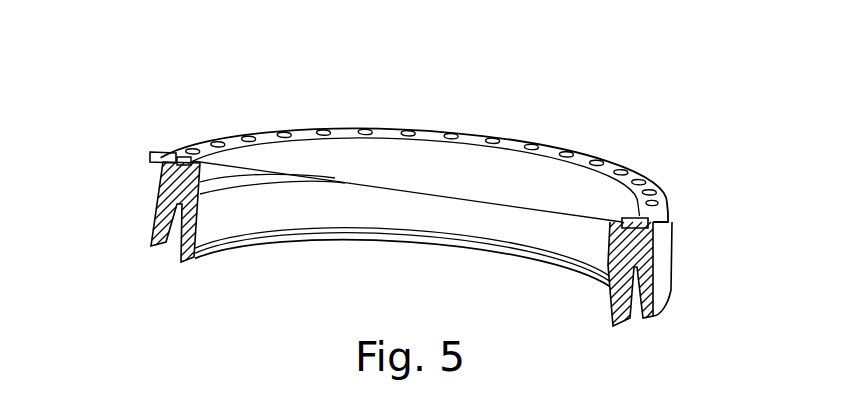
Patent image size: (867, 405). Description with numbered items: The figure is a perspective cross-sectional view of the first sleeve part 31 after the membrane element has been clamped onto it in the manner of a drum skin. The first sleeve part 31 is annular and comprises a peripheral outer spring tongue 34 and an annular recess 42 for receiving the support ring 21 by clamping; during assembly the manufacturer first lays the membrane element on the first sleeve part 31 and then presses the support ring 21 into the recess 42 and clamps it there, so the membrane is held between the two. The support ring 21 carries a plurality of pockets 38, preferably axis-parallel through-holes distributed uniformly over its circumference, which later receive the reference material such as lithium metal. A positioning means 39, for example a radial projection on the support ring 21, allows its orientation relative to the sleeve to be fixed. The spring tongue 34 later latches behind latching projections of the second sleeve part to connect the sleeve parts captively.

The support ring 21 is at (477, 137).
The pockets 38 is at (412, 133).
The spring tongue 34 is at (157, 228).
The annular recess 42 is at (186, 176).
The positioning means 39 is at (151, 156).
The first sleeve part 31 is at (638, 245).